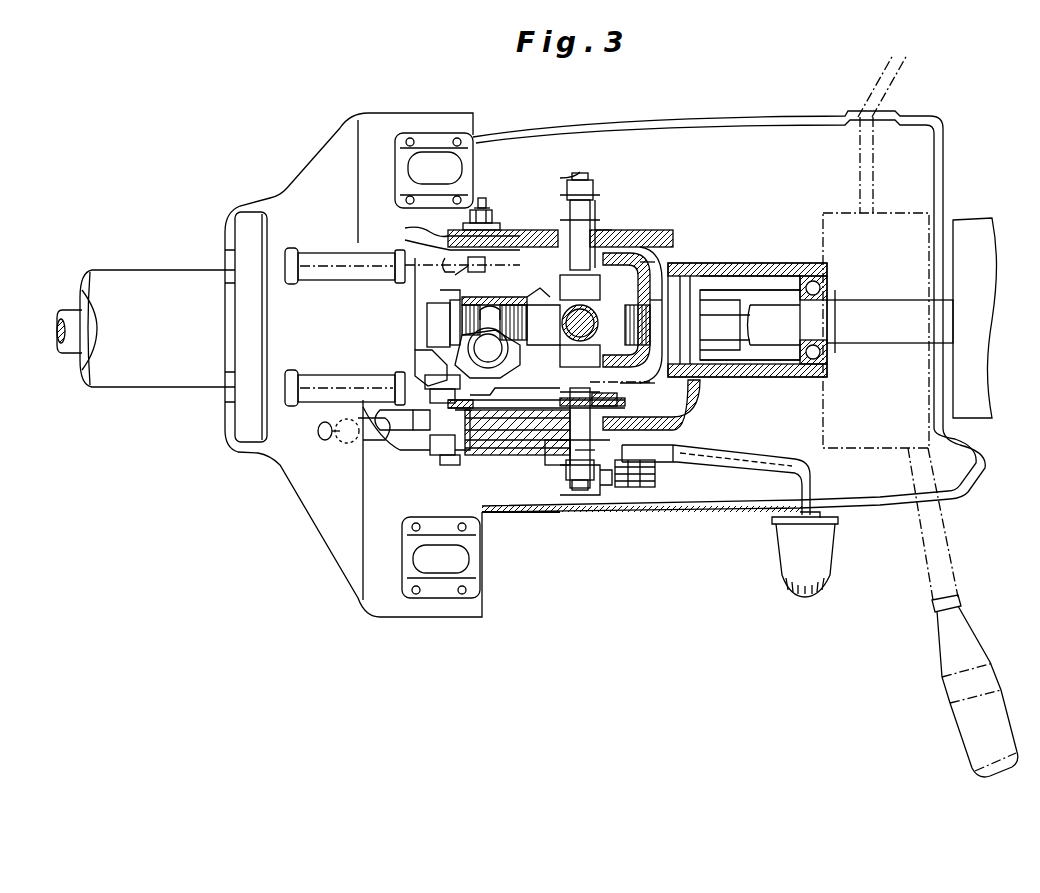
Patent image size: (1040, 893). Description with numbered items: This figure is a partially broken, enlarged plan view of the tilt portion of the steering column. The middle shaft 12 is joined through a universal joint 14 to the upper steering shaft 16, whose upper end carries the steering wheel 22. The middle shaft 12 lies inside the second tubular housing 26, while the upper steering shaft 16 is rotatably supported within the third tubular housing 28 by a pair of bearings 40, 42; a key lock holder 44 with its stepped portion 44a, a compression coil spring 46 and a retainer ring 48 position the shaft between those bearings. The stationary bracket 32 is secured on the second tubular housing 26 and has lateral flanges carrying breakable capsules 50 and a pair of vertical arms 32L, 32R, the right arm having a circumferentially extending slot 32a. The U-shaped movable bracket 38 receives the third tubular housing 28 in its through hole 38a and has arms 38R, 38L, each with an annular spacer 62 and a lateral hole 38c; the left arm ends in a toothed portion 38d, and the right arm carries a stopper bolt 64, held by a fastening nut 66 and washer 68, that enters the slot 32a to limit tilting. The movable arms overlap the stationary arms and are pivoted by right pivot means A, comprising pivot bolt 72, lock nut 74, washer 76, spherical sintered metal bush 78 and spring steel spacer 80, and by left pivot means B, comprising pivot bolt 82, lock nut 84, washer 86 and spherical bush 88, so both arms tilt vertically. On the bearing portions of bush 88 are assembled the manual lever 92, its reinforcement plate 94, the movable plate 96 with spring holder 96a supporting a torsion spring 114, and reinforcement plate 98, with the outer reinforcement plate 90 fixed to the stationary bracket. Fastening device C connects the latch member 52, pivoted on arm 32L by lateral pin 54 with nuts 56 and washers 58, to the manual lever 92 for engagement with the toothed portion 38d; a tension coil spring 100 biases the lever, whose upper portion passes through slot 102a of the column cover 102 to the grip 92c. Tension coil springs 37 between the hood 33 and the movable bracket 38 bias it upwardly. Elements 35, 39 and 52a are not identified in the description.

The middle shaft 12 is at (60, 326).
The universal joint 14 is at (560, 320).
The upper steering shaft 16 is at (925, 330).
The steering wheel 22 is at (985, 228).
The second tubular housing 26 is at (172, 341).
The third tubular housing 28 is at (762, 275).
The stationary bracket 32 is at (385, 608).
The circumferentially extending slot 32a is at (448, 250).
The left arm of stationary bracket 32L is at (380, 440).
The right arm of stationary bracket 32R is at (410, 238).
The hood 33 is at (258, 224).
The inner housing 35 is at (655, 262).
The tension coil springs 37 is at (322, 258).
The movable bracket 38 is at (700, 262).
The through hole 38a is at (690, 335).
The lateral hole 38c is at (618, 408).
The toothed portion 38d is at (482, 337).
The left arm of movable bracket 38L is at (690, 420).
The right arm of movable bracket 38R is at (658, 250).
The housing wall 39 is at (527, 230).
The bearing 40 is at (720, 324).
The bearing 42 is at (805, 262).
The key lock holder 44 is at (764, 300).
The stepped portion 44a is at (690, 315).
The compression coil spring 46 is at (735, 372).
The retainer ring 48 is at (838, 308).
The breakable capsules 50 is at (432, 140).
The latch member 52 is at (420, 432).
The pin end 52a is at (468, 456).
The lateral pin 54 is at (428, 360).
The nuts 56 is at (430, 372).
The washers 58 is at (410, 385).
The annular spacer 62 is at (615, 234).
The stopper bolt 64 is at (460, 276).
The fastening nut 66 is at (482, 200).
The washer 68 is at (500, 228).
The lateral pivot bolt 72 is at (562, 172).
The lock nut 74 is at (582, 178).
The washer 76 is at (598, 212).
The sintered metal bush 78 is at (610, 230).
The spacer 80 is at (651, 284).
The lateral pivot bolt 82 is at (590, 496).
The lock nut 84 is at (604, 474).
The washer 86 is at (578, 500).
The sintered metal bush 88 is at (562, 498).
The reinforcement plate 90 is at (530, 455).
The manual lever 92 is at (735, 470).
The grip 92c is at (818, 559).
The reinforcement plate 94 is at (509, 348).
The movable plate 96 is at (552, 470).
The spring holder 96a is at (640, 478).
The reinforcement plate 98 is at (522, 455).
The tension coil spring 100 is at (348, 444).
The column cover 102 is at (768, 514).
The slot 102a is at (822, 505).
The torsion spring 114 is at (656, 474).
The right pivot means A is at (571, 166).
The left pivot means B is at (604, 504).
The fastening device C is at (483, 469).